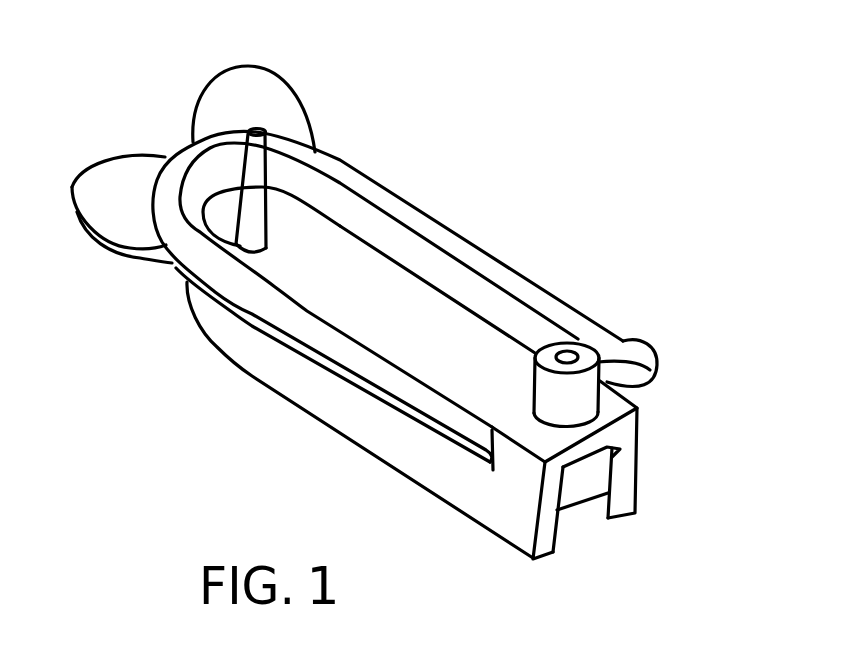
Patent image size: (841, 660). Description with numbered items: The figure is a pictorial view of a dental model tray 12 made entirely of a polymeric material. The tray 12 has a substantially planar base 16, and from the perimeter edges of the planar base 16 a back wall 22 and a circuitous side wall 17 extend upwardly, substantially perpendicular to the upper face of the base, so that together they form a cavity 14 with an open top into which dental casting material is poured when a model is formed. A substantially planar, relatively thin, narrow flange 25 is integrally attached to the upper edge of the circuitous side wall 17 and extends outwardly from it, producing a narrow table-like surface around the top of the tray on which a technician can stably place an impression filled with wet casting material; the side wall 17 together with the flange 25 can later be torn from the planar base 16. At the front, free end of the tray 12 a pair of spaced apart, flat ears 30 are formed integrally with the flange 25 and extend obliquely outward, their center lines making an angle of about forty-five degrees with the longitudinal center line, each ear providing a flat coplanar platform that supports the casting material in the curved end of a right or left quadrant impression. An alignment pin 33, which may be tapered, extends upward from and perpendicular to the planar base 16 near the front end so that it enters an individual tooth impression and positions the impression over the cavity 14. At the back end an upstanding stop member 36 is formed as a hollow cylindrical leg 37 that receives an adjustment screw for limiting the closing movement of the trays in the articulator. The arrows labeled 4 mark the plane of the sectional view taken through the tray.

The section line 4- 4 is at (87, 88).
The dental tray 12 is at (478, 215).
The cavity 14 is at (350, 289).
The planar base 16 is at (455, 333).
The circuitous side wall 17 is at (383, 177).
The back wall 22 is at (646, 426).
The flange 25 is at (177, 180).
The ears 30 is at (247, 93).
The alignment pin 33 is at (250, 185).
The stop member 36 is at (581, 395).
The hollow cylindrical leg 37 is at (569, 354).